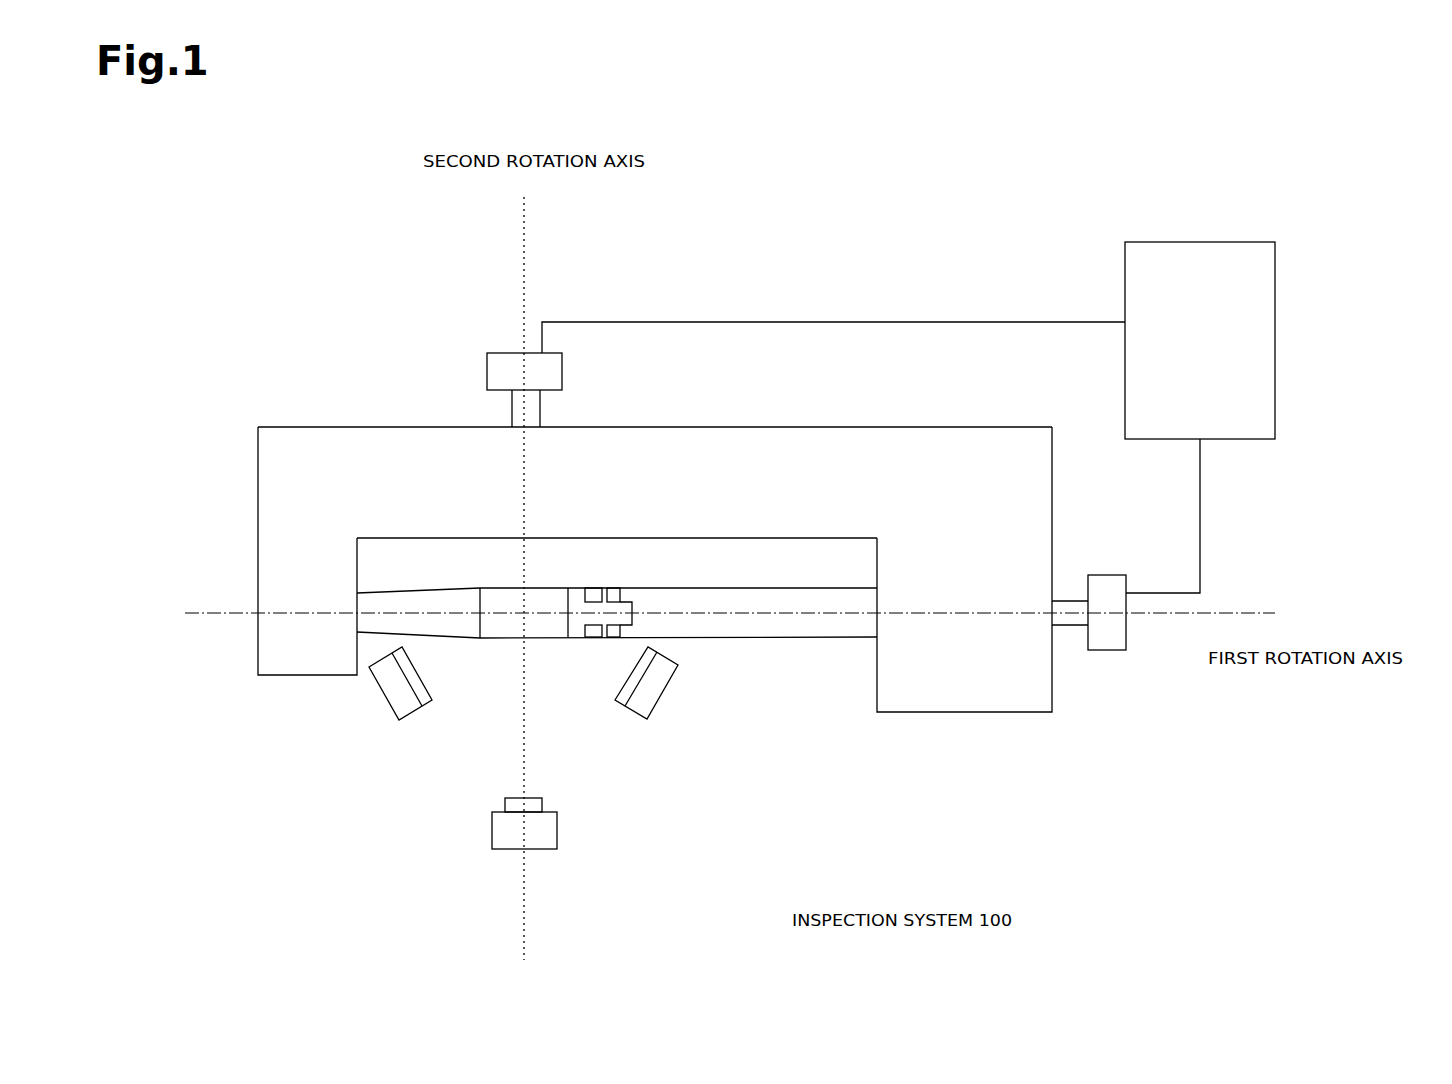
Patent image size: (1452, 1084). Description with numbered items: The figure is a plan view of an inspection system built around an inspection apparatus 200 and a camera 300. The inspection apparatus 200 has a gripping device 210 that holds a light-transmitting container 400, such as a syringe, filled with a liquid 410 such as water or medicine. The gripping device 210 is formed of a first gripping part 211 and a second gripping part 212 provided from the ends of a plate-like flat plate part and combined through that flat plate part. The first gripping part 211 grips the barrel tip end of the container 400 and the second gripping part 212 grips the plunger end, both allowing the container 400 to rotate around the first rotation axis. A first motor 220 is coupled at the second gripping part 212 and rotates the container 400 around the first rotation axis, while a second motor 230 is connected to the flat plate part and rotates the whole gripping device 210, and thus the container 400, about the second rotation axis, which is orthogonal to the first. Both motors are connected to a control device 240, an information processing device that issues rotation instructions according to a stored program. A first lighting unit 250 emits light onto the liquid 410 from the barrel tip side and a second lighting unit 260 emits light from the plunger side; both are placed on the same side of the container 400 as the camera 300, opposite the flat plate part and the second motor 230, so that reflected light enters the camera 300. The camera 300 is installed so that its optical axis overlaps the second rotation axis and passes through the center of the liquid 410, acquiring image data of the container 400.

The inspection apparatus 200 is at (1205, 203).
The gripping device 210 is at (902, 427).
The first gripping part 211 is at (258, 647).
The second gripping part 212 is at (1052, 685).
The first motor 220 is at (1112, 575).
The second motor 230 is at (563, 370).
The control device 240 is at (1250, 242).
The first lighting unit 250 is at (425, 706).
The second lighting unit 260 is at (657, 708).
The camera 300 is at (557, 830).
The container 400 is at (760, 637).
The liquid 410 is at (528, 630).